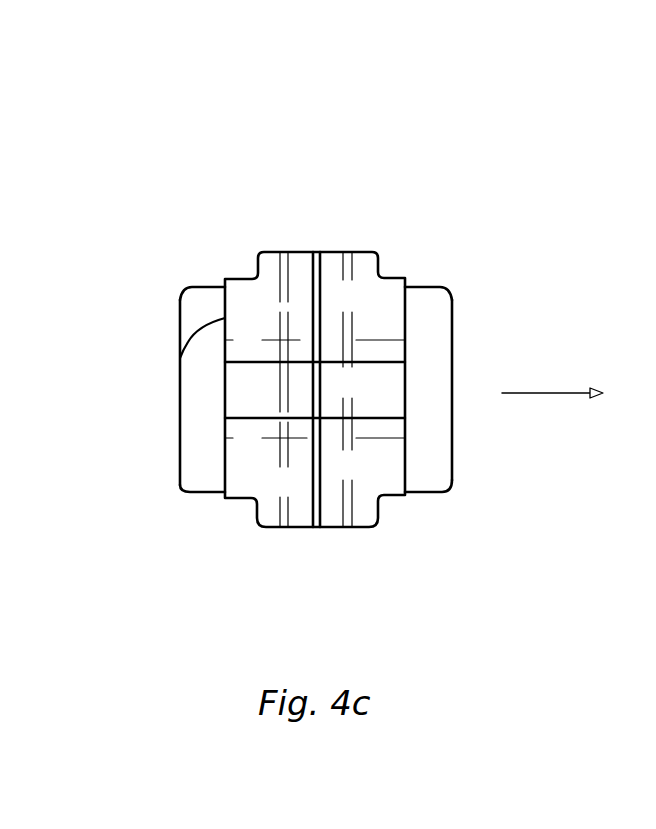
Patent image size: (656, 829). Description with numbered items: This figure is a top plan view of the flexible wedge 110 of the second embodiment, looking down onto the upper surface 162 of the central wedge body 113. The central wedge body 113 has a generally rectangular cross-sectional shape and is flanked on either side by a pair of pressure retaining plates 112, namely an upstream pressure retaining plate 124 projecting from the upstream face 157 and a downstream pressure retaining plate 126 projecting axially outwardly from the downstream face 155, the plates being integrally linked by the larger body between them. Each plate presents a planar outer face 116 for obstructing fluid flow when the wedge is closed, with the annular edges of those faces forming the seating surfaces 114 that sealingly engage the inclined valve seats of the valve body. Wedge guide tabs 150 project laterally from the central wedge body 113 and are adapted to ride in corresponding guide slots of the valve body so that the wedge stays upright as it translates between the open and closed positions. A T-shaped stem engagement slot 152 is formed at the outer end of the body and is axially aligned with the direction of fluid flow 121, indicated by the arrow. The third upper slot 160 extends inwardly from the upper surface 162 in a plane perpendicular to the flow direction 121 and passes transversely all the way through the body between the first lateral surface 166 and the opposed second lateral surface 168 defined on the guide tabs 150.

The flexible wedge 110 is at (400, 105).
The pressure retaining plates 112 is at (205, 285).
The central wedge body 113 is at (368, 250).
The seating surfaces 114 is at (182, 298).
The outer faces 116 is at (172, 334).
The direction of fluid flow 121 is at (542, 392).
The upstream pressure retaining plate 124 is at (198, 426).
The downstream pressure retaining plate 126 is at (437, 412).
The wedge guide tabs 150 is at (256, 276).
The stem engagement slot 152 is at (372, 378).
The downstream face 155 is at (407, 460).
The upstream face 157 is at (180, 360).
The third upper slot 160 is at (317, 508).
The upper surface 162 is at (267, 460).
The first lateral surface 166 is at (361, 527).
The second lateral surface 168 is at (298, 252).